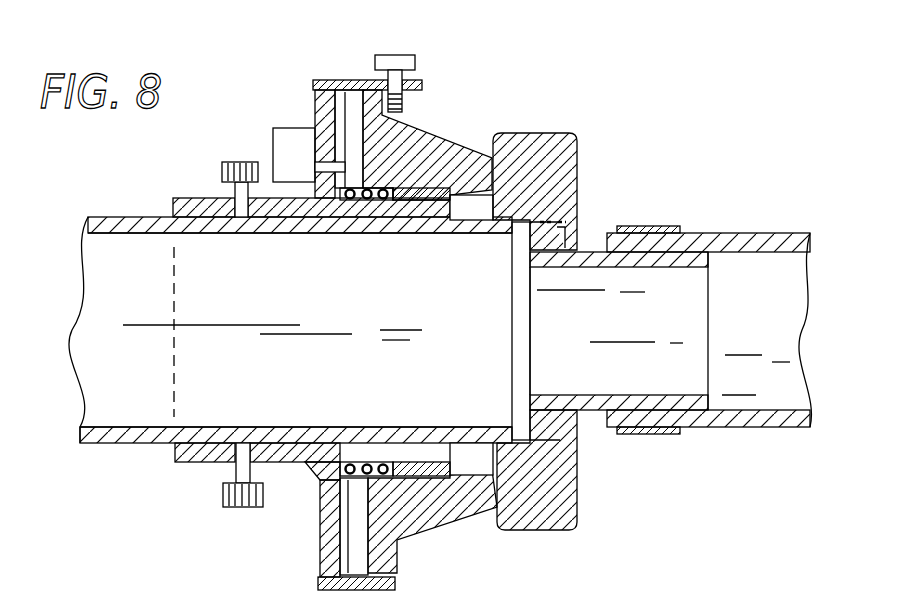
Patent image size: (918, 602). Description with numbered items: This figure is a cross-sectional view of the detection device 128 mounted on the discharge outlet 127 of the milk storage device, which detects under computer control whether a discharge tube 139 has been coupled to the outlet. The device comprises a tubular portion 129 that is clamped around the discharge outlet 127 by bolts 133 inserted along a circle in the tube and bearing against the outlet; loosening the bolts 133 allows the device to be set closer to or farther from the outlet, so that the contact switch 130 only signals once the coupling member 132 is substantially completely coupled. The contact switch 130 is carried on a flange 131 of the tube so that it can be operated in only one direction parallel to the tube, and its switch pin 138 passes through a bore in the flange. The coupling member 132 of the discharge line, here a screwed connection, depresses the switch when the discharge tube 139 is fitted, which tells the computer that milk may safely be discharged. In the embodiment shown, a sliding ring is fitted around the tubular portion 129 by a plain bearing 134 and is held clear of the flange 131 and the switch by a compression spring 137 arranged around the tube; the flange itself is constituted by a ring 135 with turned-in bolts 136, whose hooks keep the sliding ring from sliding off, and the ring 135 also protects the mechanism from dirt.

The discharge outlet 127 is at (488, 368).
The detection device 128 is at (462, 97).
The tubular portion 129 is at (182, 196).
The contact switch 130 is at (288, 127).
The flange 131 is at (318, 544).
The coupling member 132 is at (570, 168).
The bolts 133 is at (222, 169).
The plain bearing 134 is at (432, 196).
The ring 135 is at (343, 53).
The turned-in bolts 136 is at (408, 56).
The compression spring 137 is at (362, 200).
The switch pin 138 is at (350, 110).
The discharge tube 139 is at (758, 178).